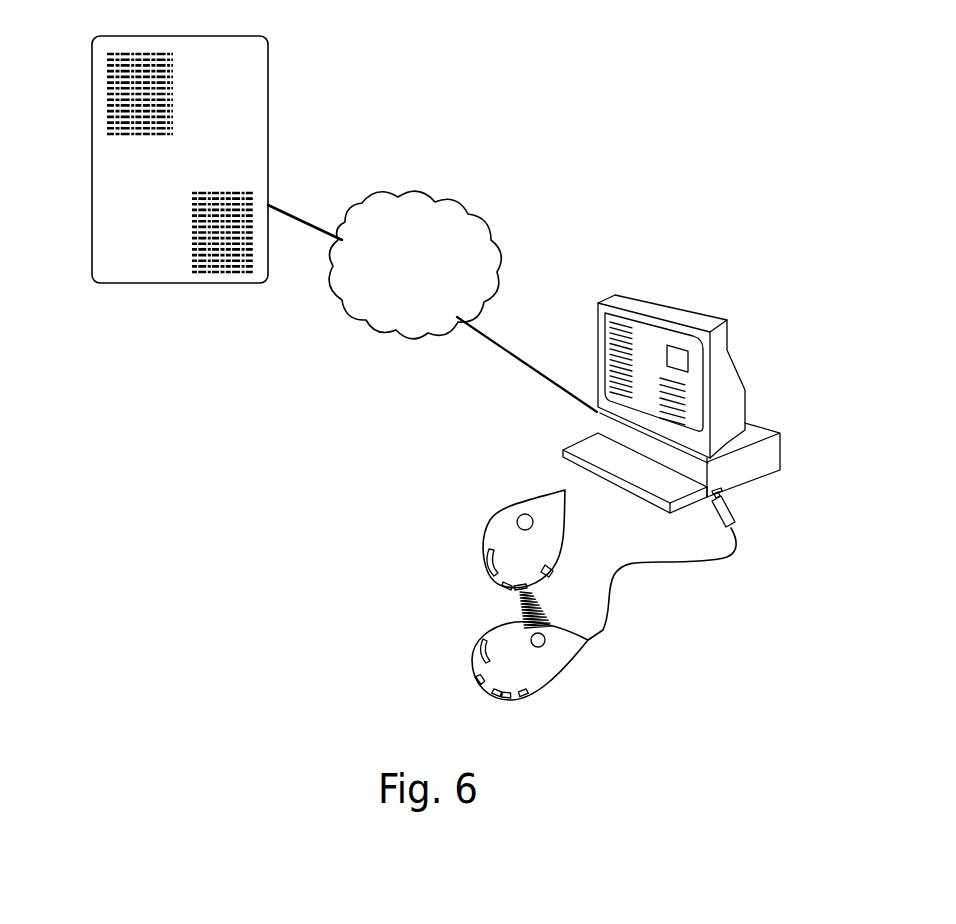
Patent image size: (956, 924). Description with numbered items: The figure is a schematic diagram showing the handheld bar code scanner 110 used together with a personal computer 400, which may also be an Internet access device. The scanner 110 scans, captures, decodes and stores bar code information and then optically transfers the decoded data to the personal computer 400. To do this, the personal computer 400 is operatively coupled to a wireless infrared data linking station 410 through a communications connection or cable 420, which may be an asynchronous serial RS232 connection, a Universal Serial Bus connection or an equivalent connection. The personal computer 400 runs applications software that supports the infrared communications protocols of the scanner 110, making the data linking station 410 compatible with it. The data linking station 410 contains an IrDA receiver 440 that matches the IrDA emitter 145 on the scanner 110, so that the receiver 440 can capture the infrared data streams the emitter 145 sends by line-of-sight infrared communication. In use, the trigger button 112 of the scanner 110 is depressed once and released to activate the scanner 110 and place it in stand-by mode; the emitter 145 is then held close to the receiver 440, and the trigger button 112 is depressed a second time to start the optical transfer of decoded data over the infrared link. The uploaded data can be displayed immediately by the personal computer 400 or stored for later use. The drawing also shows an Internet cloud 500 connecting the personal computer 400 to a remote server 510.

The scanner 110 is at (503, 540).
The trigger button 112 is at (519, 514).
The IrDA emitter 145 is at (517, 593).
The personal computer 400 is at (688, 313).
The IR data linking station 410 is at (577, 647).
The cable 420 is at (677, 563).
The IrDA receiver 440 is at (538, 647).
The internet 500 is at (422, 327).
The server 510 is at (158, 283).